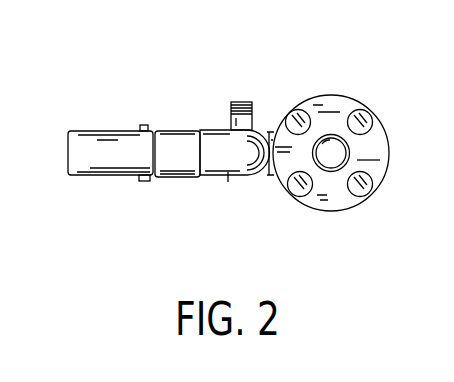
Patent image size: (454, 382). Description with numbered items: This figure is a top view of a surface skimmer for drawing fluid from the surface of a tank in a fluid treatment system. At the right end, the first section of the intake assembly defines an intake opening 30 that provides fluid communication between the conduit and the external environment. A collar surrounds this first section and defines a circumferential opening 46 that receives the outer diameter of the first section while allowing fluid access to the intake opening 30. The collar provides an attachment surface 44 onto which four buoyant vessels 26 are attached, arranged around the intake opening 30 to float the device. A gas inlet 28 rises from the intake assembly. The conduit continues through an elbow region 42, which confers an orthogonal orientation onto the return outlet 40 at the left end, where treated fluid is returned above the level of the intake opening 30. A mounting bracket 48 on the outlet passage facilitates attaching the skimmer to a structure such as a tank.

The buoyant vessel 26 is at (300, 98).
The gas inlet 28 is at (220, 108).
The intake opening 30 is at (332, 142).
The return outlet 40 is at (70, 150).
The elbow region 42 is at (233, 176).
The attachment surface 44 is at (371, 150).
The circumferential opening 46 is at (333, 172).
The mounting bracket 48 is at (142, 128).